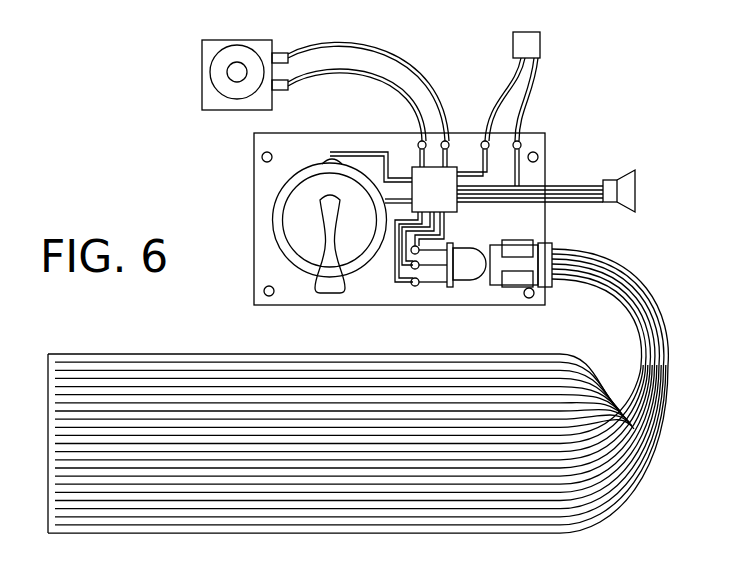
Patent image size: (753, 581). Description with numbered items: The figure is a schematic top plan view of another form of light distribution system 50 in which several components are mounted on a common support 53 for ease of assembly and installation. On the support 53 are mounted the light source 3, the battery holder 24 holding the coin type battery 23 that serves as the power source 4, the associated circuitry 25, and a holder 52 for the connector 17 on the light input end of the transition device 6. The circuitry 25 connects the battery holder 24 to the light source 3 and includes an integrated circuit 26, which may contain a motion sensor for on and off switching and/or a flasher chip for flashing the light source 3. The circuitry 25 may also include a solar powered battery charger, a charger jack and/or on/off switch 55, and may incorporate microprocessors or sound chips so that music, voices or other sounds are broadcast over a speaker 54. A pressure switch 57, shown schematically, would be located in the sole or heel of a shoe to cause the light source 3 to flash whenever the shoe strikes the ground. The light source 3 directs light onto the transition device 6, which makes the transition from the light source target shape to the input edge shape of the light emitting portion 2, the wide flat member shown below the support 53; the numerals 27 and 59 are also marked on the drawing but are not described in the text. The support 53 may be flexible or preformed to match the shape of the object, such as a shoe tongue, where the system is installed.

The light emitting portion 2 is at (226, 516).
The light source 3 is at (460, 293).
The power source 4 is at (266, 241).
The transition device 6 is at (640, 300).
The connector 17 is at (543, 282).
The coin type battery 23 is at (306, 192).
The battery holder 24 is at (290, 258).
The circuitry 25 is at (427, 72).
The integrated circuit 26 is at (448, 178).
The edge of panel 27 is at (544, 575).
The light distribution system 50 is at (385, 219).
The holder 52 is at (517, 250).
The common support 53 is at (540, 170).
The speaker 54 is at (638, 182).
The charger jack and/or on/off switch 55 is at (540, 42).
The pressure switch 57 is at (205, 71).
The wires 59 is at (372, 46).